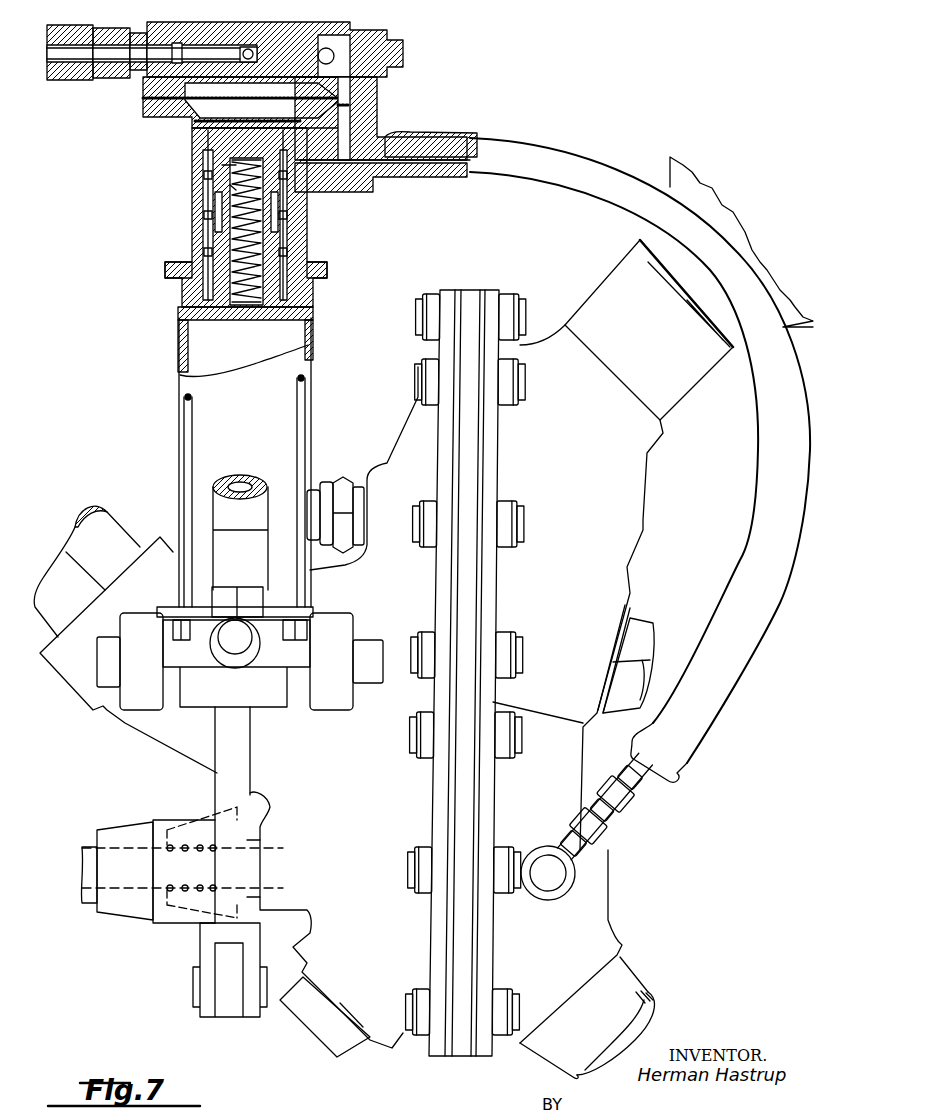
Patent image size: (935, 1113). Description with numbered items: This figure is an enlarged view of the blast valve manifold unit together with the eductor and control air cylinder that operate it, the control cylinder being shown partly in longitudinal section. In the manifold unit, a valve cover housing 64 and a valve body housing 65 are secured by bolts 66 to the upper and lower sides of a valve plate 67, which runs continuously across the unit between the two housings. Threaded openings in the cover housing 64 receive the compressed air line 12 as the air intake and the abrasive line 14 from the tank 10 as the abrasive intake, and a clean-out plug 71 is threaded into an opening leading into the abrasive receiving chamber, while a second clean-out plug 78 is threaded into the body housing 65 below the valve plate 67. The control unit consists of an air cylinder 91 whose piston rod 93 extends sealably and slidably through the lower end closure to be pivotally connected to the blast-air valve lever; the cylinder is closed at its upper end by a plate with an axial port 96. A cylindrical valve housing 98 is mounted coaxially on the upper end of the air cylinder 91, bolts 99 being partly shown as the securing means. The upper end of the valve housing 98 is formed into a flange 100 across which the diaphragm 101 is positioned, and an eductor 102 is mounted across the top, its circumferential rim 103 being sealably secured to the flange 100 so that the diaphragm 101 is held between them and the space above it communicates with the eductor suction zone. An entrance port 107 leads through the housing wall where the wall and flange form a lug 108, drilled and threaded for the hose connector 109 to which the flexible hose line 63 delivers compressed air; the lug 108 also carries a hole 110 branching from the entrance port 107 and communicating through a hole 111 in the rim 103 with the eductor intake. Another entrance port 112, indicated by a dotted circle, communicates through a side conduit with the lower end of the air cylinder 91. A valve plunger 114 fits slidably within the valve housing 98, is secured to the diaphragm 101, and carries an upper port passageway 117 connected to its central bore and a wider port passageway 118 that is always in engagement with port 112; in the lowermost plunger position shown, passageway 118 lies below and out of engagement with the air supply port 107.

The tank 10 is at (705, 192).
The compressed air line 12 is at (640, 992).
The abrasive line 14 is at (690, 390).
The flexible hose line 63 is at (548, 150).
The valve cover housing 64 is at (579, 684).
The valve body housing 65 is at (193, 714).
The bolts 66 is at (520, 512).
The valve plate 67 is at (488, 287).
The clean-out plug 71 is at (653, 627).
The second clean-out plug 78 is at (343, 1040).
The air cylinder 91 is at (179, 382).
The piston rod 93 is at (250, 748).
The axial opening or port 96 is at (248, 320).
The cylindrical valve housing 98 is at (192, 193).
The bolts 99 is at (188, 441).
The flange 100 is at (217, 104).
The diaphragm 101 is at (200, 110).
The eductor 102 is at (270, 25).
The circumferential rim 103 is at (147, 92).
The entrance port 107 is at (327, 163).
The lug 108 is at (402, 132).
The hose connector 109 is at (420, 132).
The hole 110 is at (376, 118).
The hole 111 is at (352, 92).
The entrance port 112 is at (233, 190).
The valve plunger 114 is at (217, 262).
The upper port passageway 117 is at (258, 130).
The wider port passageway 118 is at (215, 228).